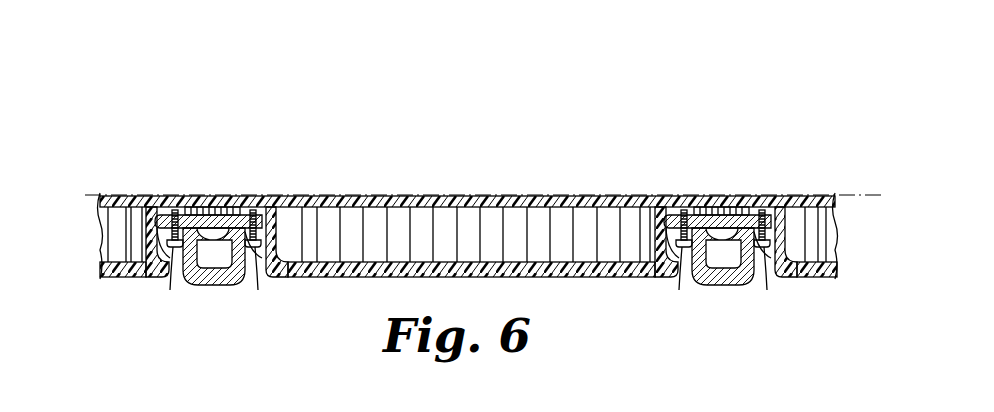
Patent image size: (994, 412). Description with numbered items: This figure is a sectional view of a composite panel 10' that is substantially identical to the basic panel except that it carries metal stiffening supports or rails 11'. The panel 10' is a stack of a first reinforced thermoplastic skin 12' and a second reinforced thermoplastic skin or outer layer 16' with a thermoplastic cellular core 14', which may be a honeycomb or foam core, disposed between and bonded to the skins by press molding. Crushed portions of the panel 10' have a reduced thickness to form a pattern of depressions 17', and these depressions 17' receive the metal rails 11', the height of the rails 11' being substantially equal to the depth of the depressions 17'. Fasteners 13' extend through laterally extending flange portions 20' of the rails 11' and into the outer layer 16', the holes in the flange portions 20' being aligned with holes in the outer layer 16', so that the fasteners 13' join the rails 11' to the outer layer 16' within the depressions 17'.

The panel 10' is at (639, 95).
The metal stiffening supports or rails 11' is at (463, 283).
The first reinforced thermoplastic skin 12' is at (467, 161).
The fasteners 13' is at (470, 275).
The cellular core 14' is at (497, 291).
The second reinforced thermoplastic skin or outer layer 16' is at (489, 280).
The depressions 17' is at (480, 205).
The flange portions 20' is at (472, 221).